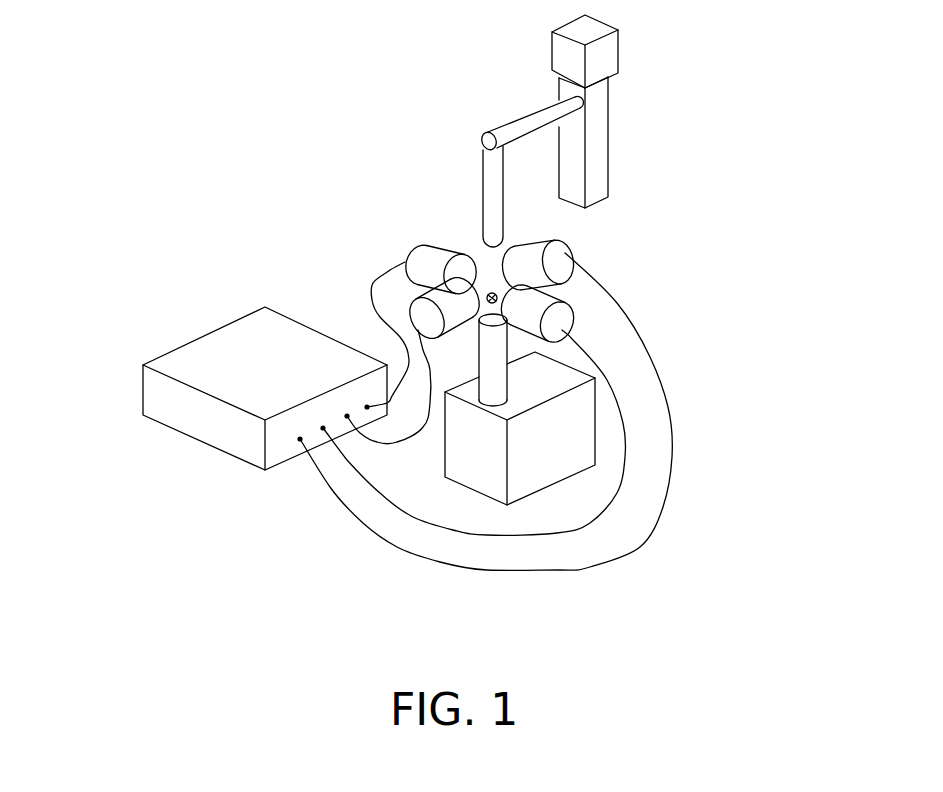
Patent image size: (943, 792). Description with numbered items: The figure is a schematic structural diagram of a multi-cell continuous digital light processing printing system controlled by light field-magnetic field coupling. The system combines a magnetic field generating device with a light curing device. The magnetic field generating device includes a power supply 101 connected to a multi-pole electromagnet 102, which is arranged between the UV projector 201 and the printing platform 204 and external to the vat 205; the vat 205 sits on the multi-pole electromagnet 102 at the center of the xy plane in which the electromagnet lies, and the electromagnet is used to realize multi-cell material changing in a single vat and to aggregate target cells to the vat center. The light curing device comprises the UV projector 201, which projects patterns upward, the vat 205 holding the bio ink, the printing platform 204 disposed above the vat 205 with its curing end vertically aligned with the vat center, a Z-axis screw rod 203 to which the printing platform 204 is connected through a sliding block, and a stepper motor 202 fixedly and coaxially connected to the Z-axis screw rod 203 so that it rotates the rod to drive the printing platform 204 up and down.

The power supply 101 is at (237, 345).
The multi-pole electromagnet 102 is at (440, 267).
The UV projector 201 is at (543, 428).
The stepper motor 202 is at (602, 60).
The Z-axis screw rod 203 is at (593, 175).
The printing platform 204 is at (497, 213).
The vat 205 is at (503, 298).